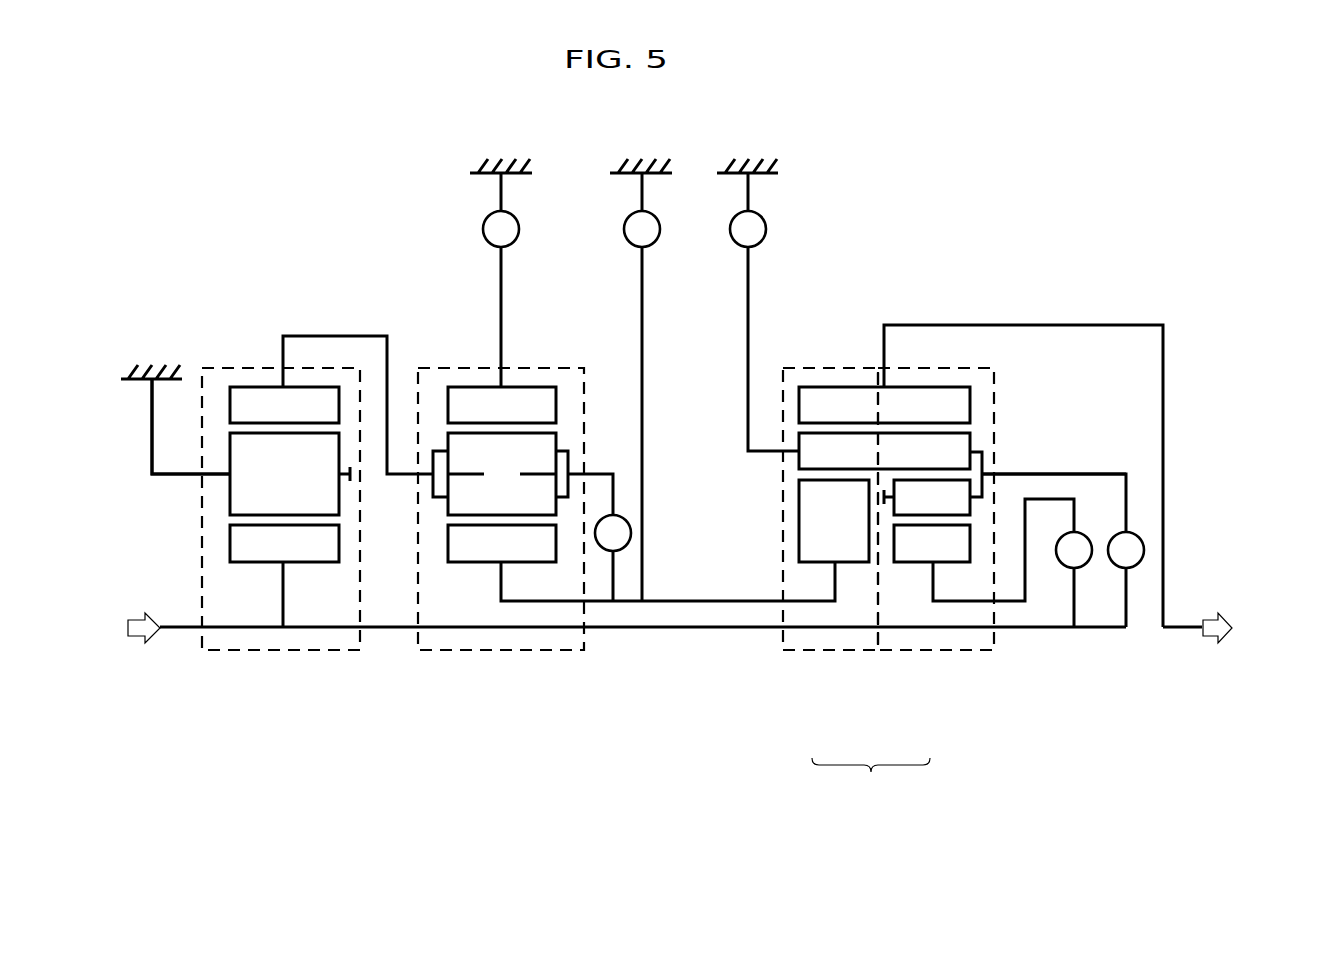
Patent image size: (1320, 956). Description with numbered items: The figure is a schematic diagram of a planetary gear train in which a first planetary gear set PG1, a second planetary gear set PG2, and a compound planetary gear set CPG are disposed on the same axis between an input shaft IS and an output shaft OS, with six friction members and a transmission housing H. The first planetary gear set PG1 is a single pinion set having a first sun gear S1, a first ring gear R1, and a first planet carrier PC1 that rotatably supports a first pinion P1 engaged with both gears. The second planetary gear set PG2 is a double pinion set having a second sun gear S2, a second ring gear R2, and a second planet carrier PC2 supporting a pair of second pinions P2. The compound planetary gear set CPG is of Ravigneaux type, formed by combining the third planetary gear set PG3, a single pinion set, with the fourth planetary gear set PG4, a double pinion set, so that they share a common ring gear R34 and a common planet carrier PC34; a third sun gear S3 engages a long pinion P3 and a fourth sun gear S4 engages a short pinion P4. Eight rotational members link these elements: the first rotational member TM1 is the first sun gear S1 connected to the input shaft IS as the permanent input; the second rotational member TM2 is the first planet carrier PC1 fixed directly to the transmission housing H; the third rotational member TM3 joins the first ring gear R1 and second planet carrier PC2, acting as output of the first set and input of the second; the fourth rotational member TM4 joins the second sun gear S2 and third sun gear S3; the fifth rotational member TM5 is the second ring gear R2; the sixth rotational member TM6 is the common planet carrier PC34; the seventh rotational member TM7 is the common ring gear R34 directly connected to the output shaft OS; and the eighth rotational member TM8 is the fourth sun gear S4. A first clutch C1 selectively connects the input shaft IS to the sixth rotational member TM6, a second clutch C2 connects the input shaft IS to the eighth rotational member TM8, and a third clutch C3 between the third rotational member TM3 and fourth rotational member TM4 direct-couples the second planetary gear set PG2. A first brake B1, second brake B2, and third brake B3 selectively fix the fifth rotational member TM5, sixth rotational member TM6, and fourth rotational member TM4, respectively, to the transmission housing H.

The transmission housing H is at (145, 369).
The first brake B1 is at (501, 210).
The second brake B2 is at (764, 312).
The third brake B3 is at (642, 387).
The first clutch C1 is at (1074, 550).
The second clutch C2 is at (1126, 550).
The third clutch C3 is at (613, 533).
The first planetary gear set PG1 is at (281, 662).
The second planetary gear set PG2 is at (500, 662).
The third planetary gear set PG3 is at (816, 662).
The fourth planetary gear set PG4 is at (939, 662).
The compound planetary gear set CPG is at (871, 783).
The first ring gear R1 is at (284, 405).
The first pinion P1 is at (290, 474).
The first sun gear S1 is at (284, 543).
The second ring gear R2 is at (502, 405).
The second pinions P2 is at (500, 474).
The second sun gear S2 is at (502, 543).
The common ring gear R34 is at (884, 405).
The long pinion P3 is at (890, 465).
The short pinion P4 is at (927, 497).
The third sun gear S3 is at (834, 521).
The fourth sun gear S4 is at (932, 543).
The first planet carrier PC1 is at (173, 479).
The second planet carrier PC2 is at (612, 468).
The common planet carrier PC34 is at (1032, 470).
The first rotational member TM1 is at (286, 598).
The second rotational member TM2 is at (182, 471).
The third rotational member TM3 is at (383, 332).
The fourth rotational member TM4 is at (703, 604).
The fifth rotational member TM5 is at (504, 298).
The sixth rotational member TM6 is at (1054, 439).
The seventh rotational member TM7 is at (1025, 322).
The eighth rotational member TM8 is at (1009, 604).
The input shaft IS is at (178, 632).
The output shaft OS is at (1185, 632).